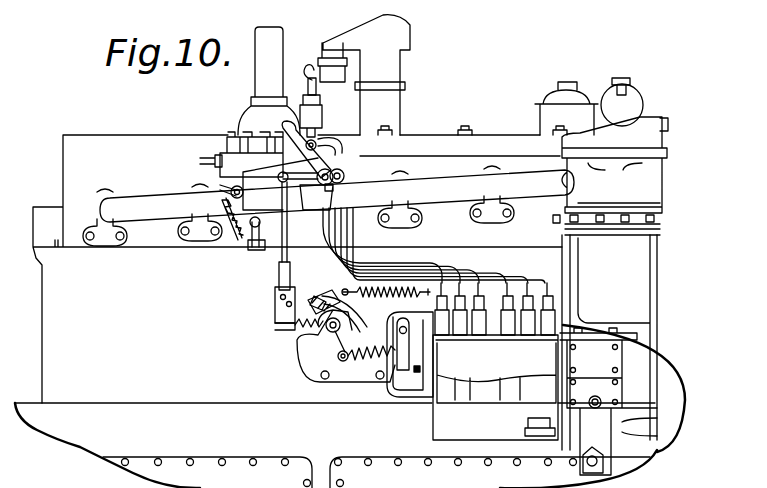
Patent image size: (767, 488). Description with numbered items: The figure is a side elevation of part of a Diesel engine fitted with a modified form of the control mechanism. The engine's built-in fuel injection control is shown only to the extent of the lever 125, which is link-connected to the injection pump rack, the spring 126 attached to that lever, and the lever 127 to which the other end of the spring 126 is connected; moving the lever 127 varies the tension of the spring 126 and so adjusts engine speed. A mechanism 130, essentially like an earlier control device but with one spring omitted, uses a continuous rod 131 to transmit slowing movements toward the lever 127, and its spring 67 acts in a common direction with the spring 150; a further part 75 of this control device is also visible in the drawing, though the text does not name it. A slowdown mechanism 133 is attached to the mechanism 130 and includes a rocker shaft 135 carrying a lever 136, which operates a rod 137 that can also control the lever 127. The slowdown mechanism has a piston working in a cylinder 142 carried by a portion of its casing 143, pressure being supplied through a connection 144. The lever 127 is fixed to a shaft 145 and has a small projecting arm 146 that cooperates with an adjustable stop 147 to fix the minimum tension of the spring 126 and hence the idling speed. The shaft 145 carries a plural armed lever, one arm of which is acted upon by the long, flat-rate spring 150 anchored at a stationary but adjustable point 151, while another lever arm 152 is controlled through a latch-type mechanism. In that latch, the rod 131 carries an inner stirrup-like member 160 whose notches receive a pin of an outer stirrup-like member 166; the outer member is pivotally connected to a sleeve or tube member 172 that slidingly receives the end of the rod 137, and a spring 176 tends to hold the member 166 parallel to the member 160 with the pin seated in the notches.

The connection 144 is at (300, 83).
The cylinder 142 is at (310, 117).
The casing 143 is at (270, 131).
The fuel inlet fitting 75 is at (208, 160).
The mechanism 130 is at (236, 176).
The lever 136 is at (316, 140).
The slowdown mechanism 133 is at (328, 165).
The rocker shaft 135 is at (346, 174).
The spring 67 is at (235, 228).
The continuous rod 131 is at (275, 258).
The rod 137 is at (283, 268).
The sleeve or tube member 172 is at (290, 280).
The inner stirrup-like member 160 is at (279, 290).
The outer stirrup-like member 166 is at (276, 320).
The spring 176 is at (295, 326).
The shaft 145 is at (326, 326).
The adjustable stop 147 is at (333, 293).
The lever arm 152 is at (326, 304).
The projecting arm 146 is at (344, 313).
The spring 150 is at (373, 290).
The point 151 is at (426, 291).
The lever 127 is at (333, 316).
The spring 126 is at (364, 352).
The lever 125 is at (400, 372).